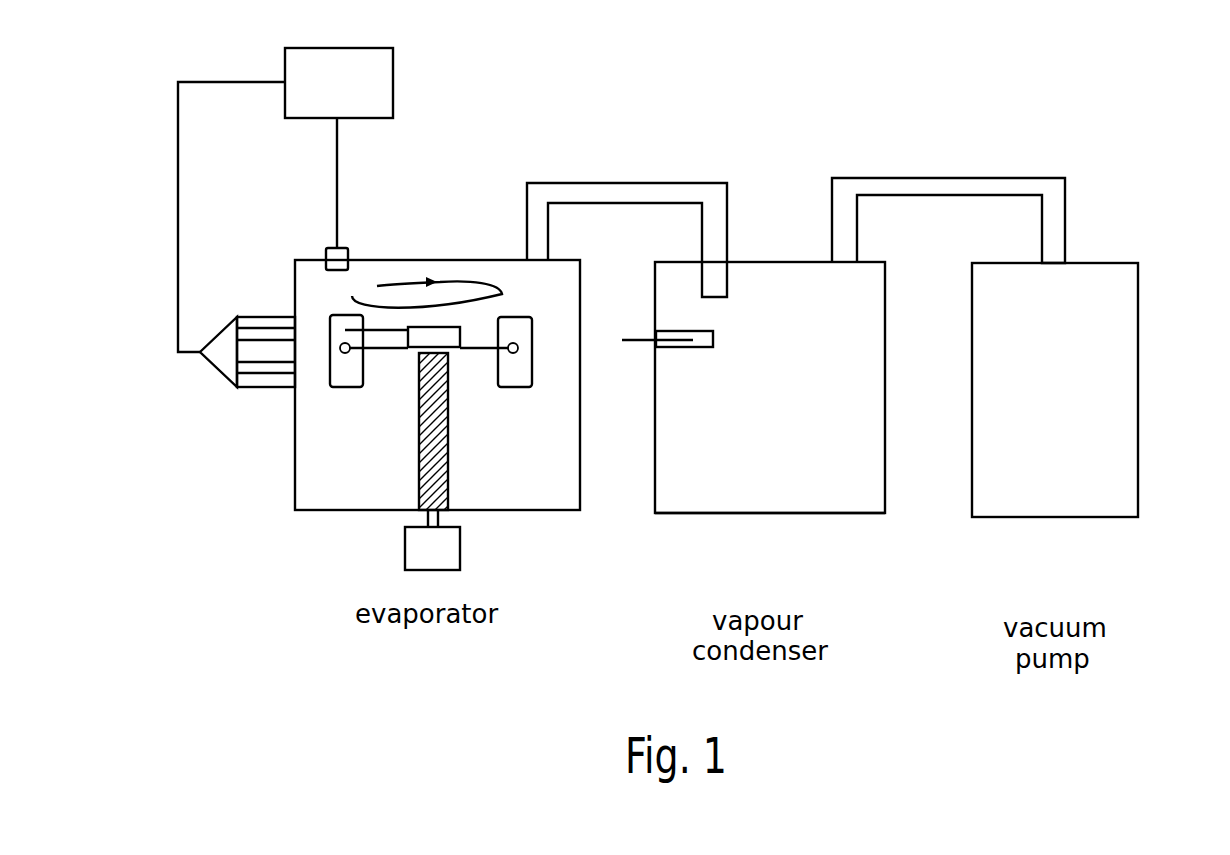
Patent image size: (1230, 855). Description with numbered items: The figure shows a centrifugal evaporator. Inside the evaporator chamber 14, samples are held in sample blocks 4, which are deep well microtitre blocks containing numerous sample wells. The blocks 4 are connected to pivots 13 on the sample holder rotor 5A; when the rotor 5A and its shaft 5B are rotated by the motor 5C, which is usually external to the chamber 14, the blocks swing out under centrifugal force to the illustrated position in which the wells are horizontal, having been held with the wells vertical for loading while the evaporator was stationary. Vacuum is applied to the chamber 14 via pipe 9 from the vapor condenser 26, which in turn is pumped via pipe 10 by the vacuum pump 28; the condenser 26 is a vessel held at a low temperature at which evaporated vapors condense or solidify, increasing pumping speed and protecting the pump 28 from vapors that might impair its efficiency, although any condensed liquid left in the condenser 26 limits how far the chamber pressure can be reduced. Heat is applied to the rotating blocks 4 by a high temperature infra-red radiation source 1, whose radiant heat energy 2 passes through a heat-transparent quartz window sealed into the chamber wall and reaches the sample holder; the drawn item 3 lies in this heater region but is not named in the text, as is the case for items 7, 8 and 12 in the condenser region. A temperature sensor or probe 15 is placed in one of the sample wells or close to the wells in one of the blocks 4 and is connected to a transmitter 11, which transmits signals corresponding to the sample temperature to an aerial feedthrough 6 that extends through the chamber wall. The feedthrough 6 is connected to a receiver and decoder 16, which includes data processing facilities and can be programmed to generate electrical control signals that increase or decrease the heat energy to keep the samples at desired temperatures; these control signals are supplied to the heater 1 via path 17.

The high temperature infra-red radiation source 1 is at (212, 330).
The radiant heat energy 2 is at (262, 395).
The source material 3 is at (288, 335).
The sample blocks 4 is at (350, 392).
The sample holder rotor 5A is at (472, 352).
The shaft 5B is at (452, 483).
The motor 5C is at (460, 548).
The aerial feedthrough 6 is at (349, 243).
The condensate outlet line 7 is at (682, 352).
The condensate collector tray 8 is at (722, 353).
The pipe 9 is at (692, 178).
The pipe 10 is at (937, 175).
The transmitter 11 is at (452, 320).
The vapour condenser 12 is at (664, 465).
The pivots 13 is at (528, 335).
The evaporator chamber 14 is at (378, 287).
The temperature sensor or probe 15 is at (345, 320).
The receiver and decoder 16 is at (362, 92).
The path 17 is at (178, 185).
The vapor condenser 26 is at (840, 513).
The vacuum pump 28 is at (1138, 470).